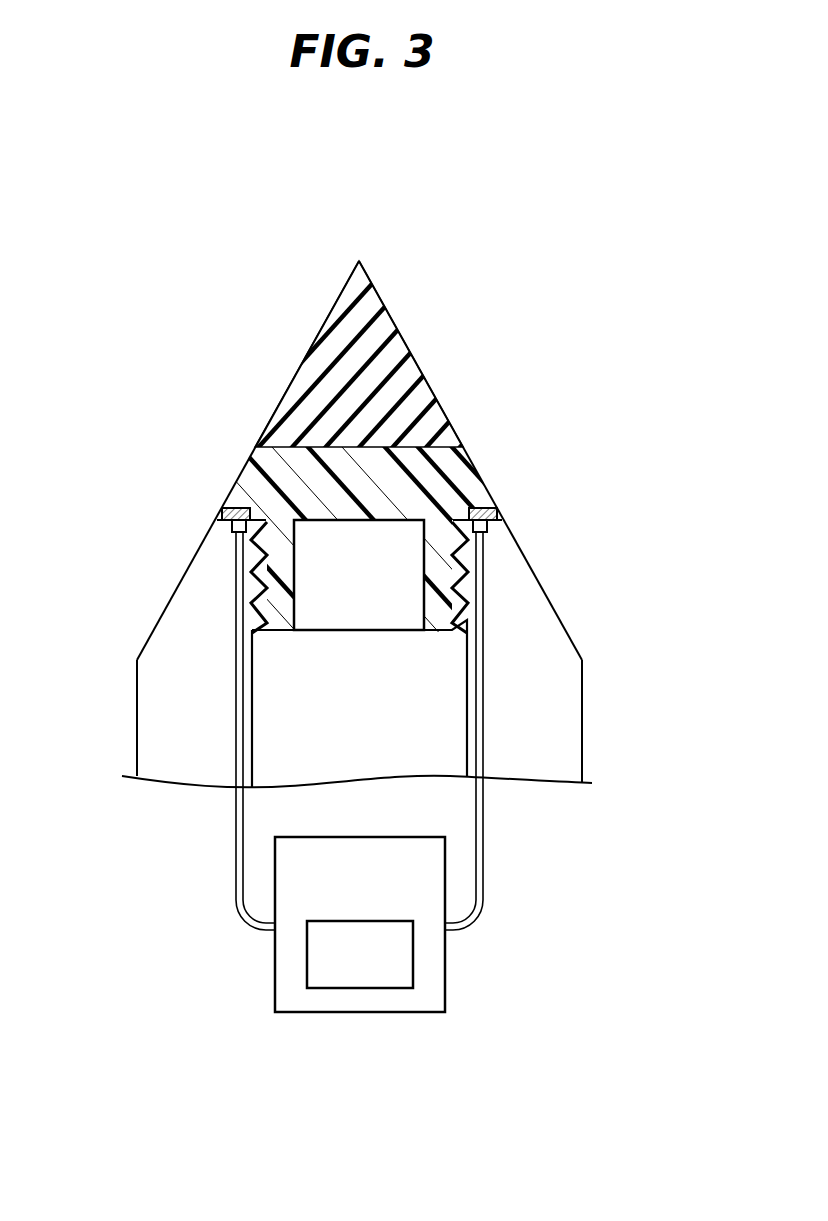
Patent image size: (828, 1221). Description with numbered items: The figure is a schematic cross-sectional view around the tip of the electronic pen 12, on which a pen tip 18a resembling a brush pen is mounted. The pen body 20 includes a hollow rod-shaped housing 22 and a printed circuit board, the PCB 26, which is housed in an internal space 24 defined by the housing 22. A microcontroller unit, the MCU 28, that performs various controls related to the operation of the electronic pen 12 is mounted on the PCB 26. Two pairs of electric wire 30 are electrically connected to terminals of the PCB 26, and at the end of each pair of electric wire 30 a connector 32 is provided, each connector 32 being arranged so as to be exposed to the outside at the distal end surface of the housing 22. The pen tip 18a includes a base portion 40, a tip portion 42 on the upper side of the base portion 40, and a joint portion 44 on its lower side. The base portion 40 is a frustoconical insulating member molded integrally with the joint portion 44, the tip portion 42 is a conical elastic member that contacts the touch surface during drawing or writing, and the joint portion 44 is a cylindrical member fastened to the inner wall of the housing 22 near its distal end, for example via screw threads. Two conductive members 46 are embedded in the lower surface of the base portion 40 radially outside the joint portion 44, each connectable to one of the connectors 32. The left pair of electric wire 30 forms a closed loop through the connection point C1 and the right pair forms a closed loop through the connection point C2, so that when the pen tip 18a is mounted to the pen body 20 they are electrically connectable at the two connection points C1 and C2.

The electronic pen 12 is at (138, 271).
The pen tip 18a is at (466, 347).
The pen body 20 is at (582, 605).
The housing 22 is at (583, 731).
The internal space 24 is at (442, 708).
The printed circuit board 26 is at (447, 976).
The microcontroller unit 28 is at (357, 990).
The electric wire 30 is at (235, 886).
The connector 32 is at (233, 531).
The base portion 40 is at (268, 462).
The tip portion 42 is at (290, 380).
The joint portion 44 is at (288, 594).
The conductive member 46 is at (233, 504).
The connection point C1 is at (205, 519).
The connection point C2 is at (512, 515).